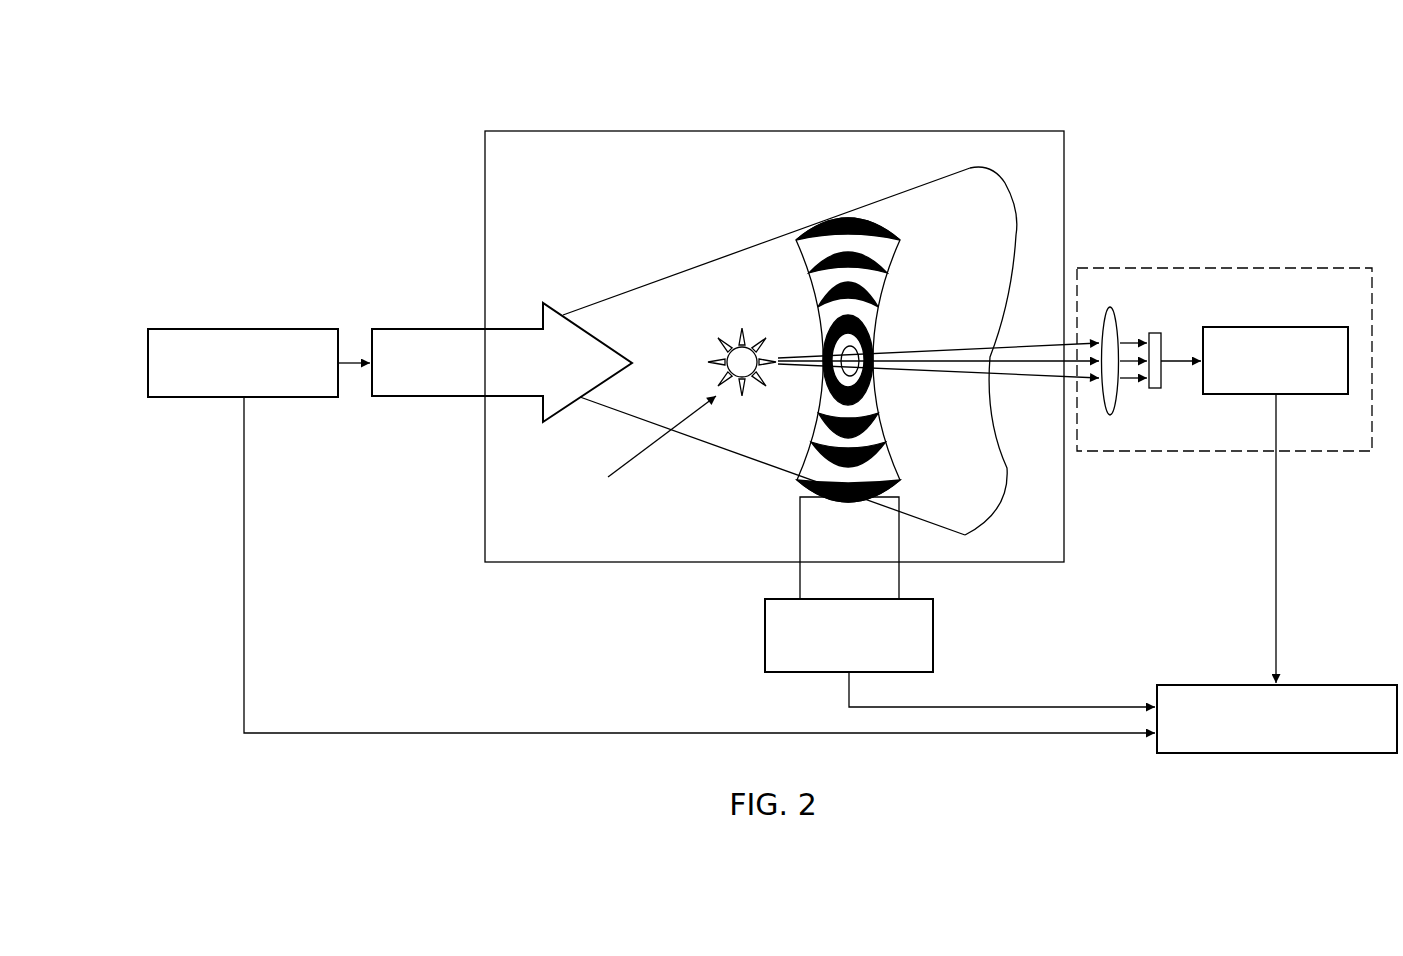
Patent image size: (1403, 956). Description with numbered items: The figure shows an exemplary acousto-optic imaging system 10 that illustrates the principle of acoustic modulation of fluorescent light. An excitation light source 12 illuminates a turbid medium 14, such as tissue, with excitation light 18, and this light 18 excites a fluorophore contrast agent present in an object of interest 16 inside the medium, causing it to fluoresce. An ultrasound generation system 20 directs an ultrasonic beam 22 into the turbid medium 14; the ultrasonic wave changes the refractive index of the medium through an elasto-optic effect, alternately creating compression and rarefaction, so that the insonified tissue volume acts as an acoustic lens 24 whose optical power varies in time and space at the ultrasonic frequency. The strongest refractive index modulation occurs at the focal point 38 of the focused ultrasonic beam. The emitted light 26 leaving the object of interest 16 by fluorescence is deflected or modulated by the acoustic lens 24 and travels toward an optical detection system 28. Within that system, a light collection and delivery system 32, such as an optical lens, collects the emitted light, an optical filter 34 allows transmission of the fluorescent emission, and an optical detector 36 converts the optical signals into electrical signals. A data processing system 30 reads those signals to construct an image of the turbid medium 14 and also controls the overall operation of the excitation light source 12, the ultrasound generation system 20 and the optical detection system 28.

The acousto-optic imaging system 10 is at (1210, 80).
The excitation light source 12 is at (238, 328).
The turbid medium 14 is at (938, 131).
The object of interest 16 is at (750, 396).
The excitation light 18 is at (442, 329).
The ultrasound generation system 20 is at (935, 632).
The ultrasonic beam 22 is at (873, 452).
The acoustic lens 24 is at (898, 252).
The emitted light 26 is at (1028, 375).
The optical detection system 28 is at (1255, 268).
The data processing system 30 is at (1330, 685).
The light collection and delivery system 32 is at (1116, 320).
The optical filter 34 is at (1156, 333).
The optical detector 36 is at (1294, 327).
The focal point 38 is at (857, 352).